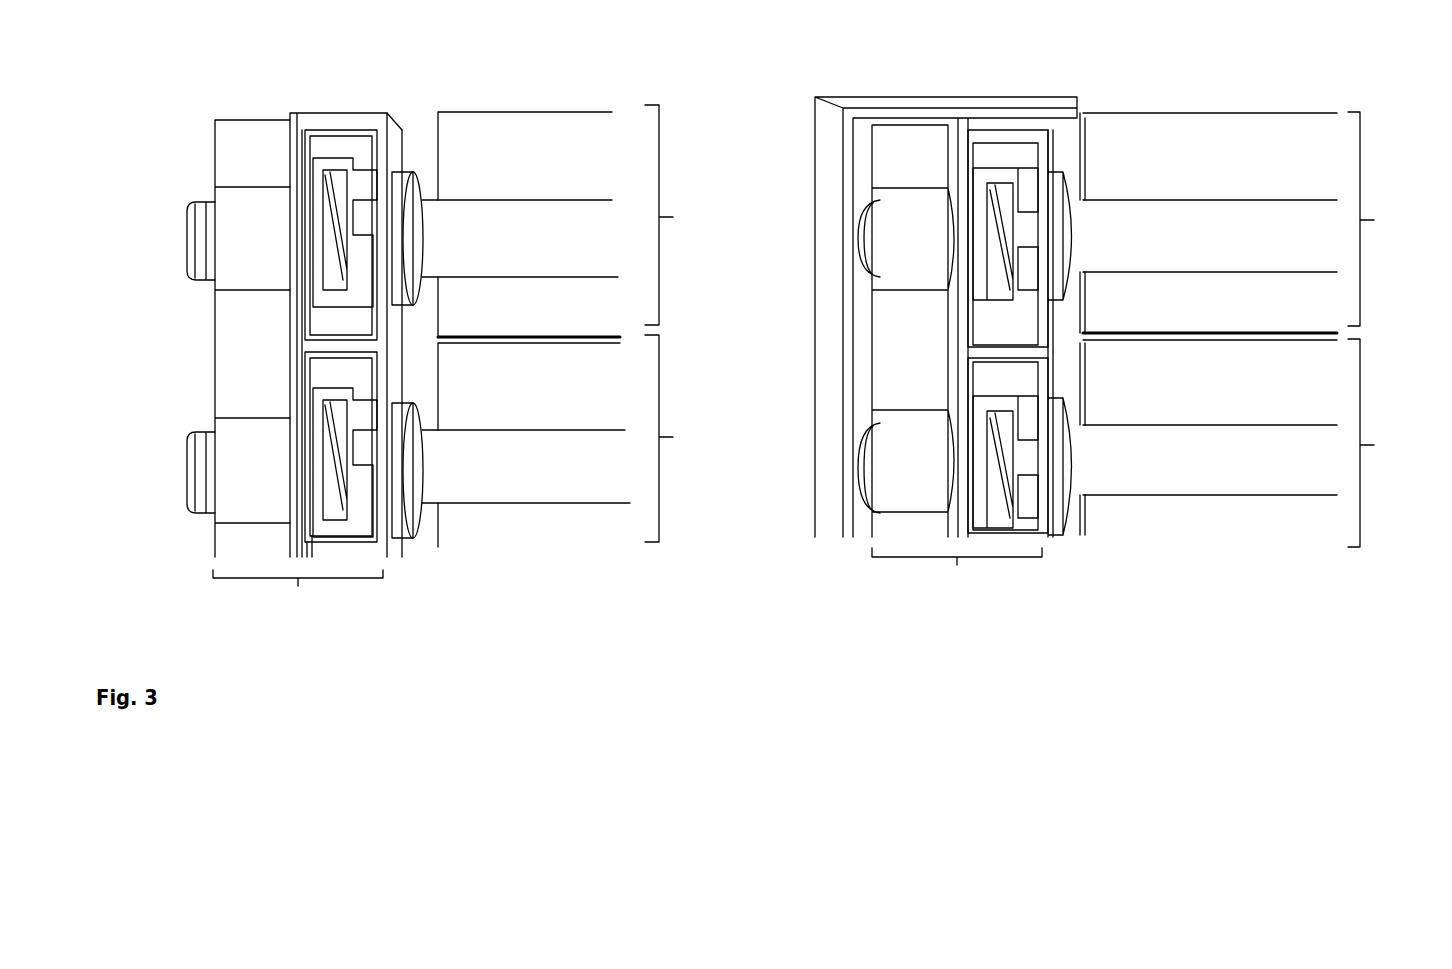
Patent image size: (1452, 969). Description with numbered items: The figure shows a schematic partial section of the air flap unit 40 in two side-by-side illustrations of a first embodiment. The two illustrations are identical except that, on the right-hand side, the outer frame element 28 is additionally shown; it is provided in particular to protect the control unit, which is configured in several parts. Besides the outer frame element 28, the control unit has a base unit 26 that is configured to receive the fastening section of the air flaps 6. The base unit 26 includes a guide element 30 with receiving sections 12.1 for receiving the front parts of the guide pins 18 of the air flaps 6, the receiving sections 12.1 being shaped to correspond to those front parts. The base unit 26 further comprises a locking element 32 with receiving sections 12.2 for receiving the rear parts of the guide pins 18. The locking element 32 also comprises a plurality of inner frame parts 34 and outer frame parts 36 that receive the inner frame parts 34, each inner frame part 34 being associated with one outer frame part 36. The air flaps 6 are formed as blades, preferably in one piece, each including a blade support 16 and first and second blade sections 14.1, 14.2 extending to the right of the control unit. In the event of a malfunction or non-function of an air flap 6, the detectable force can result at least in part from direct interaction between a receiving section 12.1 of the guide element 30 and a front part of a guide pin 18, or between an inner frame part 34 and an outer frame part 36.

The air flap 6 is at (1027, 326).
The receiving section 12.1 is at (215, 283).
The receiving section 12.2 is at (375, 128).
The first blade section 14.1 is at (528, 122).
The second blade section 14.2 is at (620, 302).
The blade support 16 is at (540, 225).
The guide pin 18 is at (181, 240).
The base unit 26 is at (627, 594).
The outer frame element 28 is at (845, 97).
The guide element 30 is at (245, 97).
The locking element 32 is at (303, 97).
The inner frame part 34 is at (337, 290).
The outer frame part 36 is at (352, 118).
The air flap unit 40 is at (735, 620).